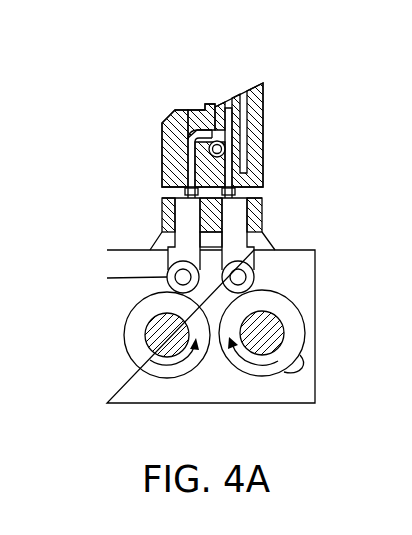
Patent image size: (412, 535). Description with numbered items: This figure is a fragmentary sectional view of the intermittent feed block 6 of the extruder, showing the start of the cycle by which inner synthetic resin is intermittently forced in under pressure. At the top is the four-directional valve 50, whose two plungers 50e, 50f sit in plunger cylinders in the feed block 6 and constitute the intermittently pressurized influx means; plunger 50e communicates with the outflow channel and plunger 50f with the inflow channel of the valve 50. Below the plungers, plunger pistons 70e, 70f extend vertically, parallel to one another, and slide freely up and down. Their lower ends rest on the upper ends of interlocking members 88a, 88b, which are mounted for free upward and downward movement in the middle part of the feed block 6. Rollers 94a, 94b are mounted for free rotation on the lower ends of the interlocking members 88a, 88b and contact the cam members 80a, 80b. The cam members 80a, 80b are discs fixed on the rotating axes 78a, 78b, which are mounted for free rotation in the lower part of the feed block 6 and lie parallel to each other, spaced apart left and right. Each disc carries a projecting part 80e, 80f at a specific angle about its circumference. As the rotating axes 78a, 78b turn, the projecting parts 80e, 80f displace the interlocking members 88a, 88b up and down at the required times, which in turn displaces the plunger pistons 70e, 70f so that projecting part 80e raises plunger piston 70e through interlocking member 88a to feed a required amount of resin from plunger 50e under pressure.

The intermittent feed block 6 is at (288, 222).
The four-directional valve 50 is at (218, 106).
The plunger 50e is at (162, 160).
The plunger 50f is at (224, 149).
The plunger piston 70e is at (188, 183).
The plunger piston 70f is at (236, 176).
The interlocking member 88a is at (178, 221).
The interlocking member 88b is at (256, 208).
The roller 94a is at (167, 277).
The roller 94b is at (240, 278).
The projecting part 80e is at (203, 303).
The projecting part 80f is at (276, 369).
The cam member 80a is at (153, 378).
The cam member 80b is at (272, 378).
The rotating axis 78a is at (145, 343).
The rotating axis 78b is at (243, 350).